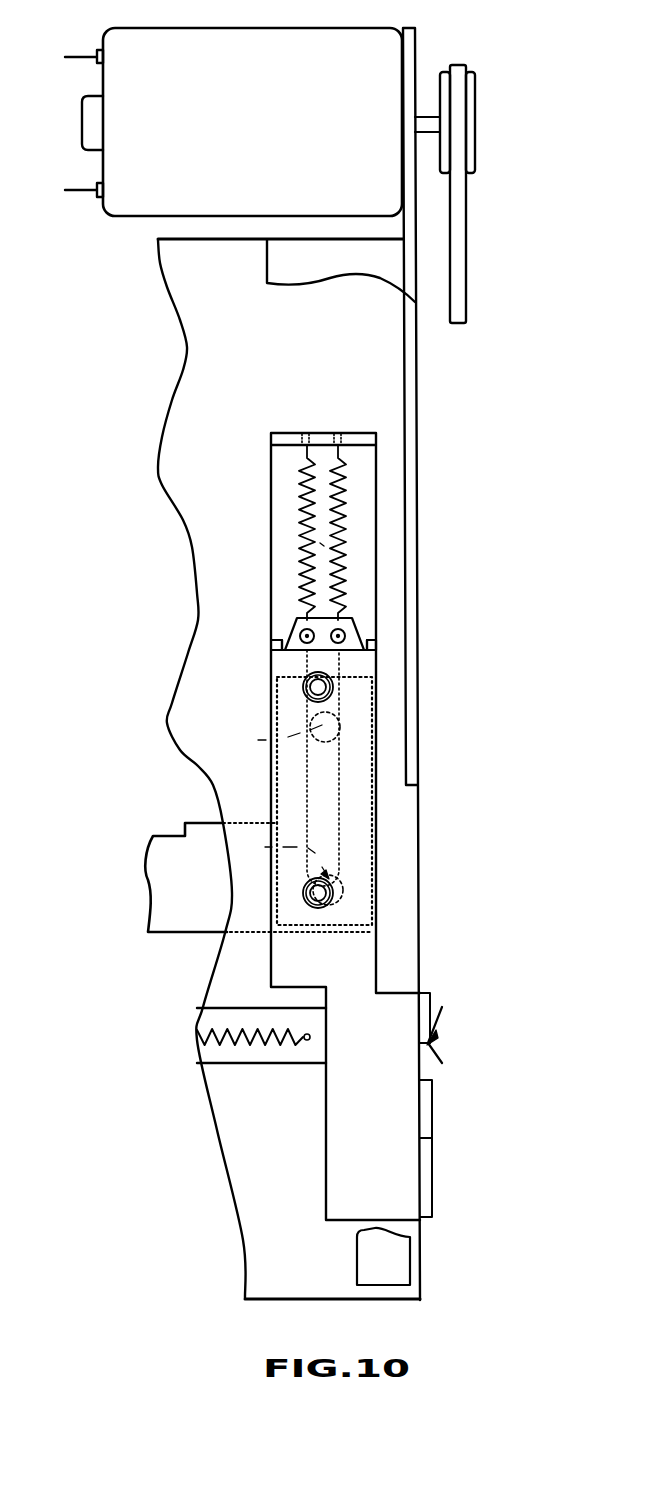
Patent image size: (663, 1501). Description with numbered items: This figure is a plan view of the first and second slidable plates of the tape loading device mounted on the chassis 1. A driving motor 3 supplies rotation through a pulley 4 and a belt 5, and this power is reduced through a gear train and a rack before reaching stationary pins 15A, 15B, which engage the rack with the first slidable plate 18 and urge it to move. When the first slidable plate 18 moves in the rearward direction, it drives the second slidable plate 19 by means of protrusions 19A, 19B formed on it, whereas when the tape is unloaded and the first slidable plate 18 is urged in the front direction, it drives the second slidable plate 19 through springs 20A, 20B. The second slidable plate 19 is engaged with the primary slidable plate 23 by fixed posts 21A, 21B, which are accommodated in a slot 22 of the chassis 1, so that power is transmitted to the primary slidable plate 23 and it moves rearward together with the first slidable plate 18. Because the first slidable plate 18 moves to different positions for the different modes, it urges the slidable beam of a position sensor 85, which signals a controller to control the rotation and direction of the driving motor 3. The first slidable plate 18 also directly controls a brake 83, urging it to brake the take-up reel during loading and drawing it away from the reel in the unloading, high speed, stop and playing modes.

The chassis 1 is at (218, 360).
The driving motor 3 is at (167, 161).
The pulley 4 is at (470, 107).
The belt 5 is at (460, 245).
The stationary pin 15A is at (332, 695).
The stationary pin 15B is at (327, 897).
The first slidable plate 18 is at (282, 663).
The second slidable plate 19 is at (280, 558).
The protrusion 19A is at (373, 645).
The protrusion 19B is at (278, 640).
The spring 20A is at (345, 526).
The spring 20B is at (302, 475).
The fixed post 21A is at (276, 740).
The fixed post 21B is at (283, 856).
The slot 22 is at (337, 785).
The primary slidable plate 23 is at (163, 875).
The brake 83 is at (443, 1010).
The position sensor 85 is at (383, 1247).